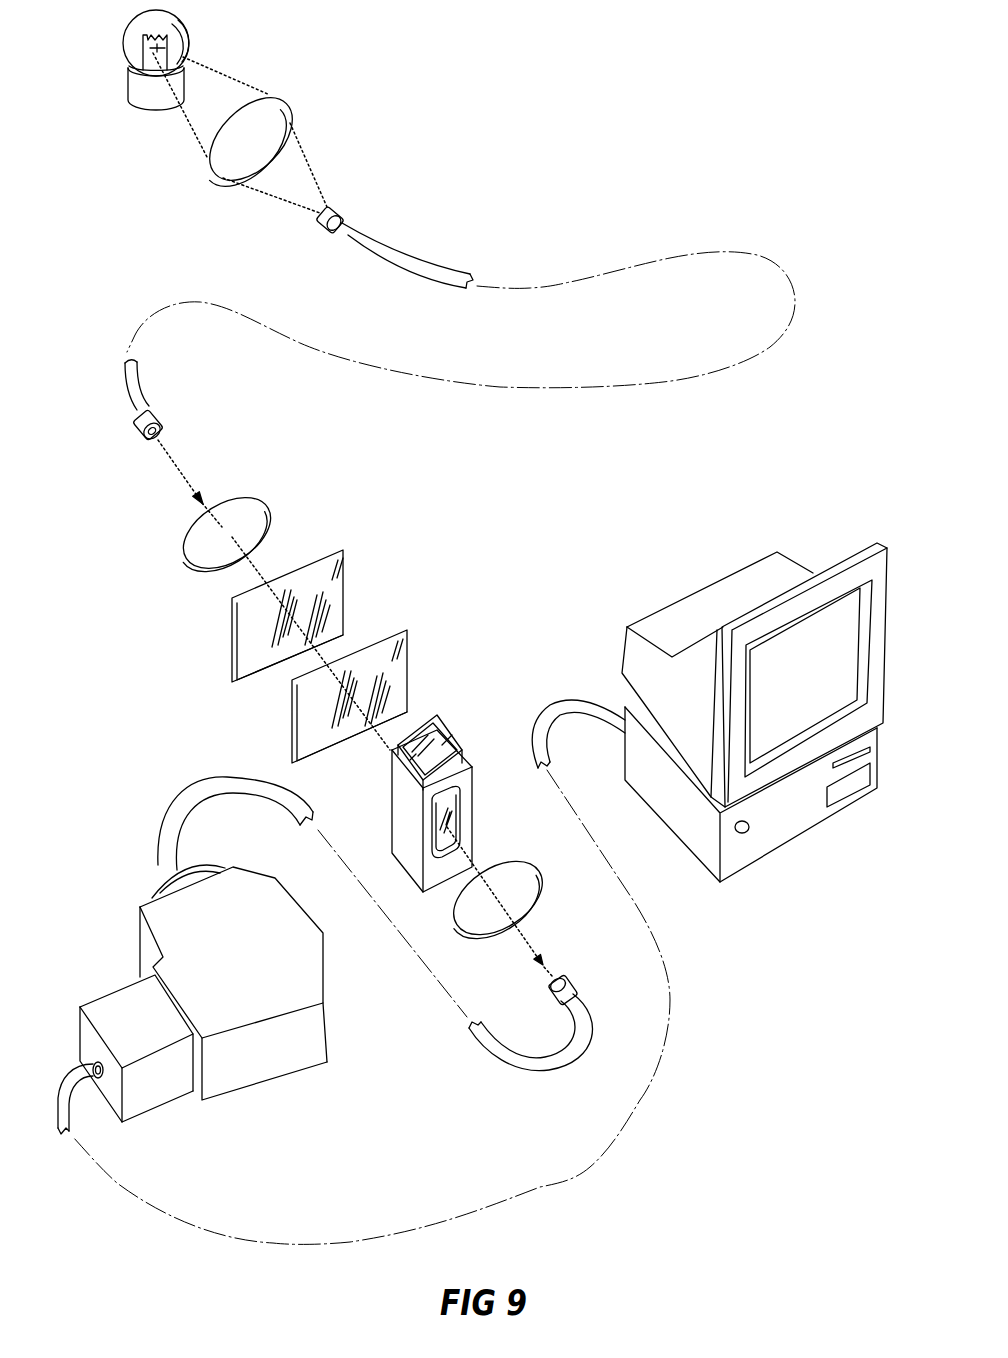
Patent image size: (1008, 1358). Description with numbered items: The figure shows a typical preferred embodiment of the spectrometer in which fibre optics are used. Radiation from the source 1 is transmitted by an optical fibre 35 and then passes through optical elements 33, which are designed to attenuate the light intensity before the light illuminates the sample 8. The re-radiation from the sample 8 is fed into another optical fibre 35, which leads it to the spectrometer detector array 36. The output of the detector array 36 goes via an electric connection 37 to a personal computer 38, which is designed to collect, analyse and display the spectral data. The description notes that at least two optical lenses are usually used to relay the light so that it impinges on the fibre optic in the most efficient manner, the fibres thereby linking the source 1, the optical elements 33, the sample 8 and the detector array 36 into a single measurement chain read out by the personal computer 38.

The source 1 is at (170, 28).
The optical fibre 35 is at (393, 266).
The optical elements 33 is at (243, 523).
The sample 8 is at (442, 727).
The spectrometer detector array 36 is at (246, 955).
The electric connection 37 is at (77, 1097).
The personal computer 38 is at (737, 593).